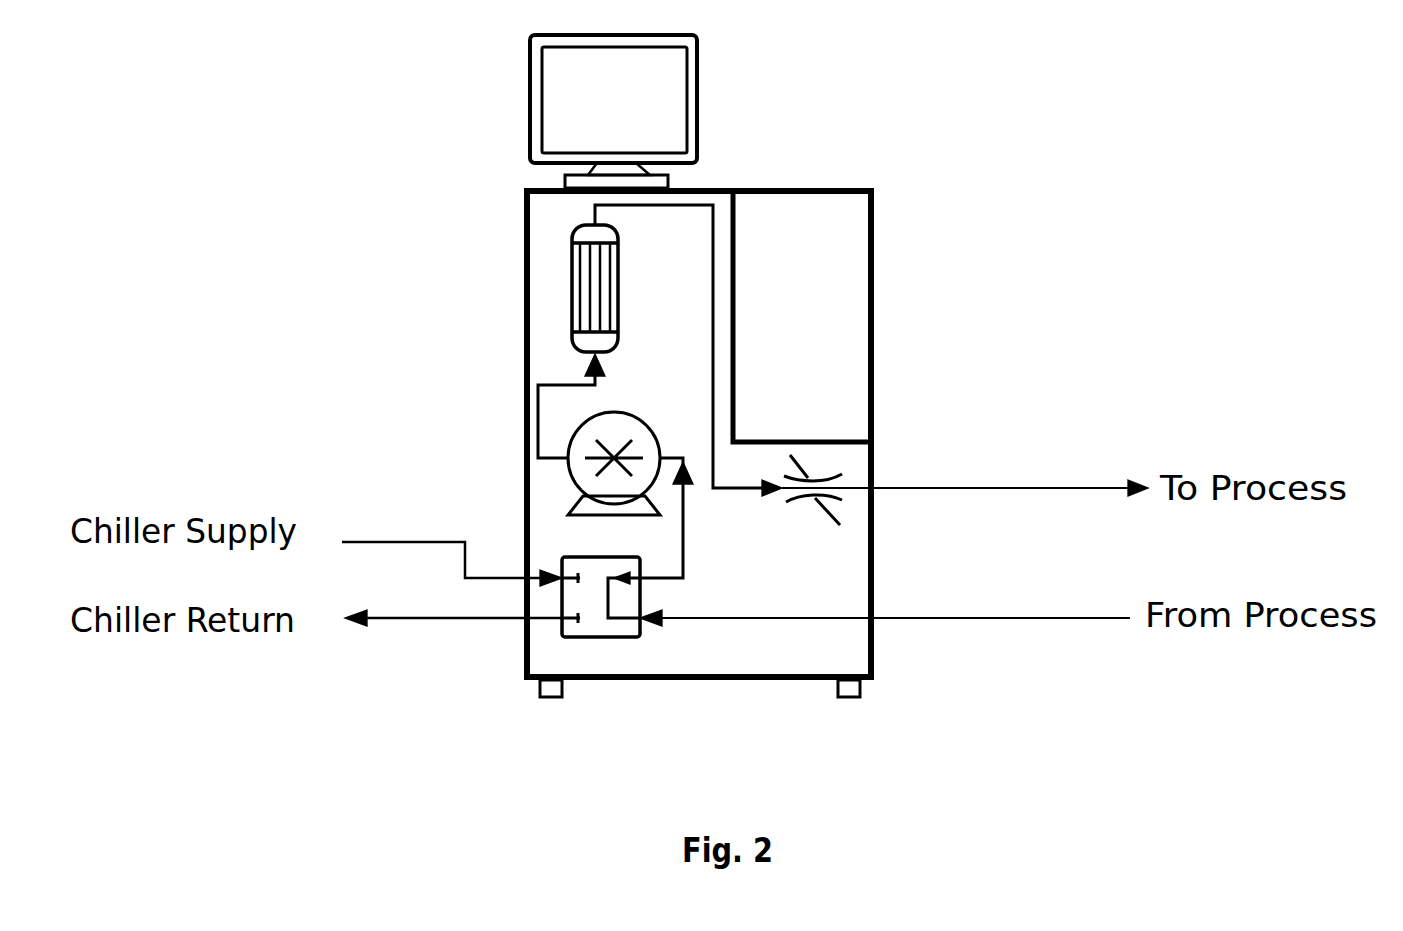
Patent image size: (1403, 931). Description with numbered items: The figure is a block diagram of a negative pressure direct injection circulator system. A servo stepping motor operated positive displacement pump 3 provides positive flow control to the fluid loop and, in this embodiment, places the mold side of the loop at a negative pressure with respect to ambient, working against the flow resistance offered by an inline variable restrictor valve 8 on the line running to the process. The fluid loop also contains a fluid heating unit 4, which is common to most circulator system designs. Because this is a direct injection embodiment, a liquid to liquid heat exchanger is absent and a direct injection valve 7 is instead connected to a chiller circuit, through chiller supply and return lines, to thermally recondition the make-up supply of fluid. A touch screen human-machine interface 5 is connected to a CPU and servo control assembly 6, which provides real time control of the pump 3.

The positive displacement pump 3 is at (568, 481).
The fluid heating unit 4 is at (572, 300).
The touch screen human-machine interface 5 is at (530, 100).
The CPU and servo control assembly 6 is at (876, 276).
The direct injection valve 7 is at (604, 637).
The inline variable restrictor valve 8 is at (828, 502).